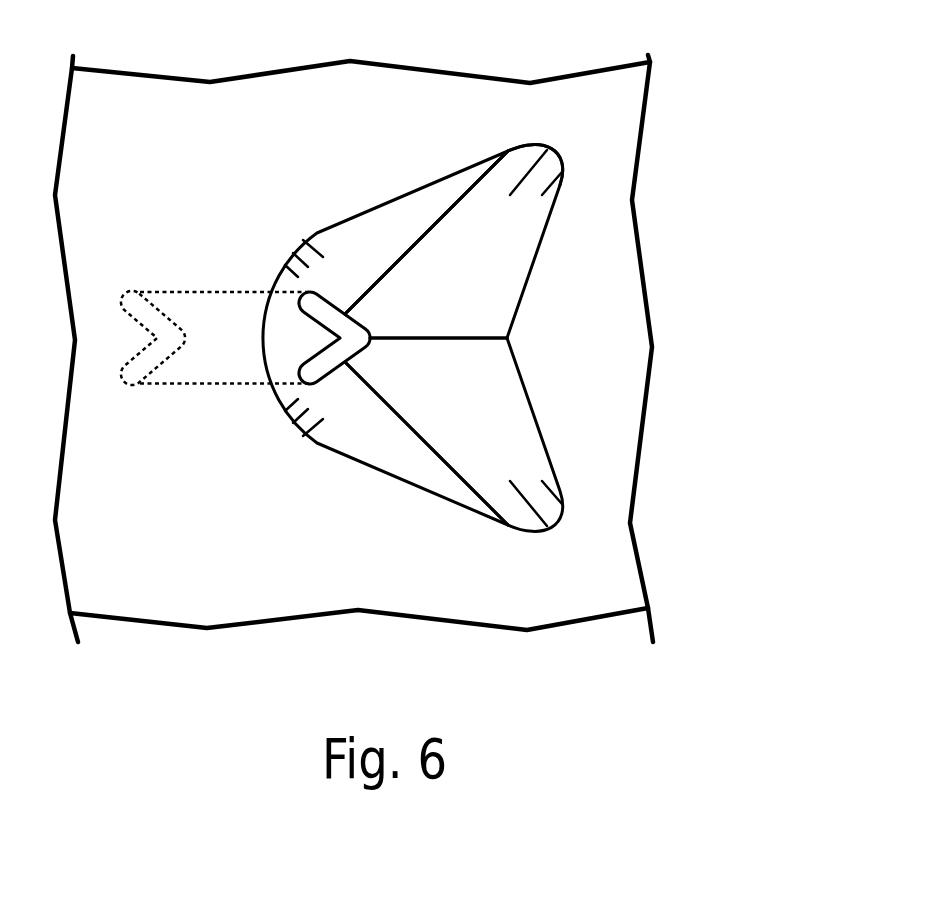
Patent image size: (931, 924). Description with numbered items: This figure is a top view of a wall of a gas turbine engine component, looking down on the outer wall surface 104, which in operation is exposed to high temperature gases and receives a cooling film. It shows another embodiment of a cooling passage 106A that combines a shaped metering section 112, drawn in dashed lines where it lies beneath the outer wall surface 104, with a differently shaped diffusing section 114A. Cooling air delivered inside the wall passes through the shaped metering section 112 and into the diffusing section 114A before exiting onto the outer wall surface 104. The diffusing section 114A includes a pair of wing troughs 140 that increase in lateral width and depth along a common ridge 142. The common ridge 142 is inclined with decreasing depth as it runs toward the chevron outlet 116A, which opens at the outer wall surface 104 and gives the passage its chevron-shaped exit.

The outer wall surface 104 is at (588, 592).
The cooling passage 106A is at (373, 438).
The shaped metering section 112 is at (223, 327).
The diffusing section 114A is at (388, 231).
The chevron outlet 116A is at (563, 187).
The wing troughs 140 is at (466, 279).
The common ridge 142 is at (483, 337).